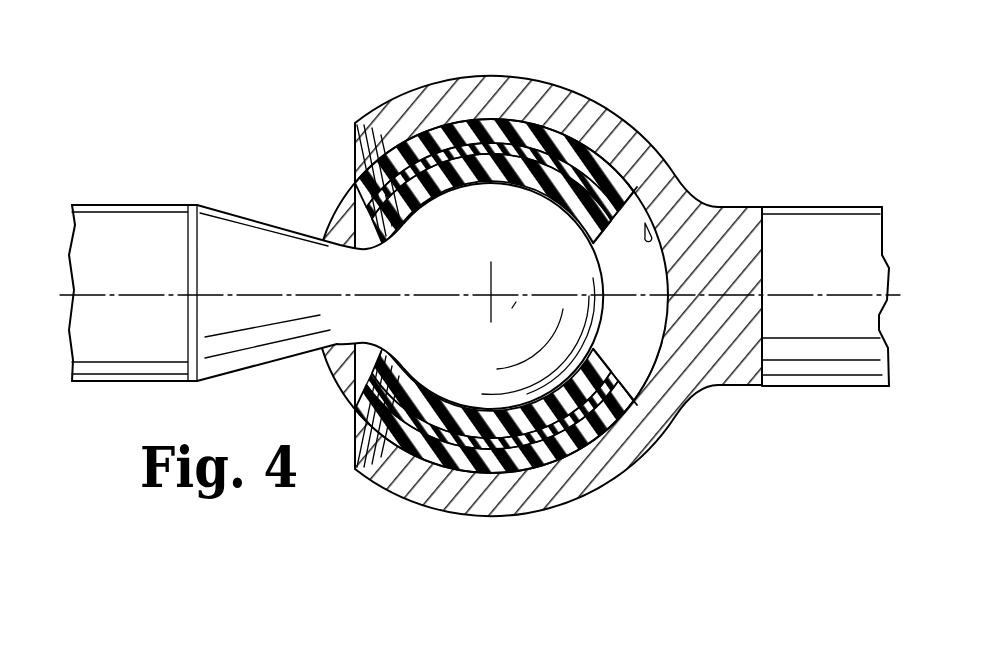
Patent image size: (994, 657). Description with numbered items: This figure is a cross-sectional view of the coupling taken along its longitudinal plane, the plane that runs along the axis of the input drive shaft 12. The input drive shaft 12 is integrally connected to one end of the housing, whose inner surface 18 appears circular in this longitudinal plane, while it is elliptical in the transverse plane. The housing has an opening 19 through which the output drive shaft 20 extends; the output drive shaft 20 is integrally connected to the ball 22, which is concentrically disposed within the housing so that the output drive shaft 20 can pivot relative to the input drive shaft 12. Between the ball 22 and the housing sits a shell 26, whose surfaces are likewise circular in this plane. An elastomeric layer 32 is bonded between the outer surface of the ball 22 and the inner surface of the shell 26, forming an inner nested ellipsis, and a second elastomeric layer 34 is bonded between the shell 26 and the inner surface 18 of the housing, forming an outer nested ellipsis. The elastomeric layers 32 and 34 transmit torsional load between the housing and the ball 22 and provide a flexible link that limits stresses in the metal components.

The input drive shaft 12 is at (825, 253).
The inner surface 18 is at (648, 188).
The opening 19 is at (325, 195).
The output drive shaft 20 is at (142, 222).
The ball 22 is at (553, 341).
The shell 26 is at (590, 452).
The elastomeric layer 32 is at (575, 189).
The second elastomeric layer 34 is at (448, 126).